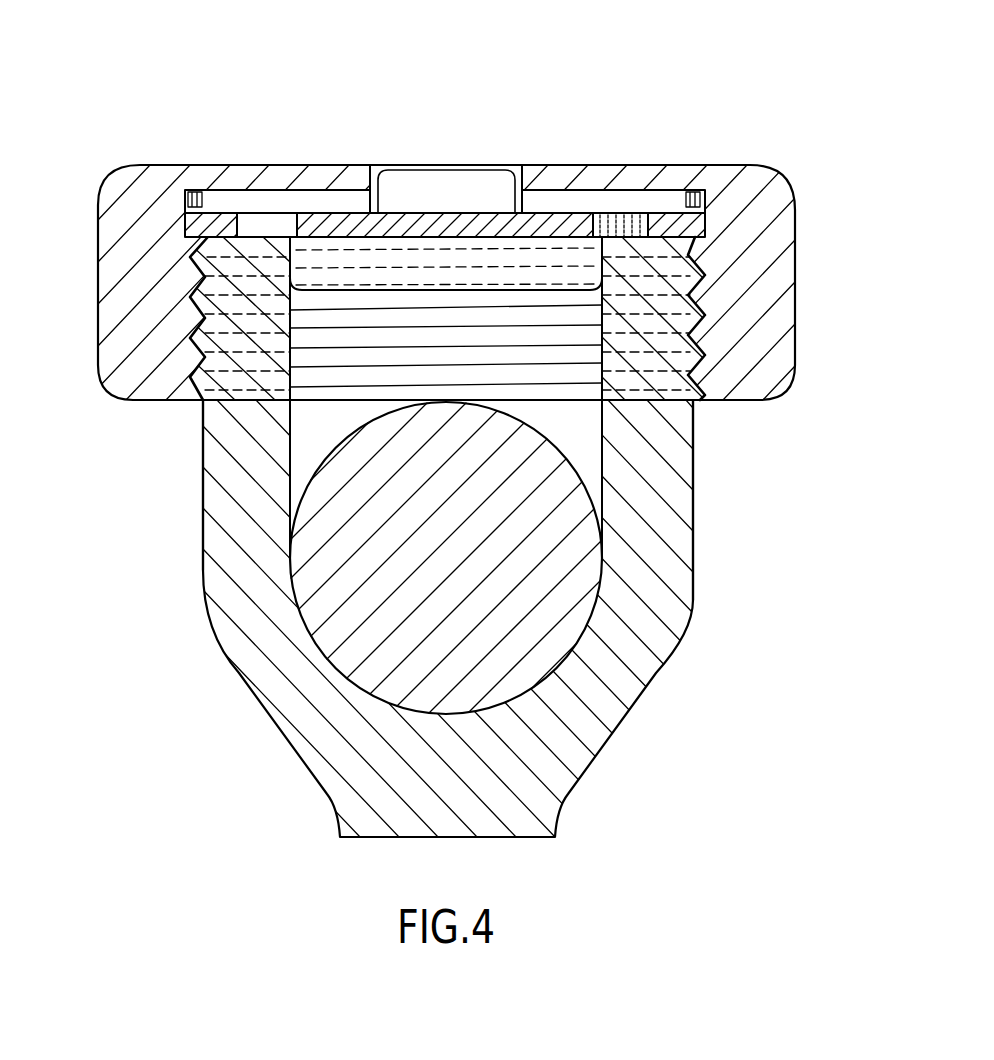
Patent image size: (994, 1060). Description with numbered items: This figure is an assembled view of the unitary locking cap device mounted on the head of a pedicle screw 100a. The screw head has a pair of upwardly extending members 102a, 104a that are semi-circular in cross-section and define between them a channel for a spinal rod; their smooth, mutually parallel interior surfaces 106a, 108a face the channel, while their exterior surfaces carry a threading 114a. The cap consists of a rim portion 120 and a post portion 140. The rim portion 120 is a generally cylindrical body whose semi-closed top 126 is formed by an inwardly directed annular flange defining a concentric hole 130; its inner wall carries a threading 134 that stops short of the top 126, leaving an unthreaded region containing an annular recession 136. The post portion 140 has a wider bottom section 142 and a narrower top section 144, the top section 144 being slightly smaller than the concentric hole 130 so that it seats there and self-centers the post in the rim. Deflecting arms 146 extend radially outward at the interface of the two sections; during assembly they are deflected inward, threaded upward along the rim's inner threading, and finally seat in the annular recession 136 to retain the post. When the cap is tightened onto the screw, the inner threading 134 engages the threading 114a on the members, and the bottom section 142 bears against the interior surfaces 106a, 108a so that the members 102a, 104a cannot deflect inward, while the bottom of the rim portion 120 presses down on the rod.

The pedicle screw 100a is at (444, 618).
The upwardly extending member 102a is at (223, 528).
The upwardly extending member 104a is at (673, 513).
The interior surface 106a is at (303, 330).
The interior surface 108a is at (592, 332).
The threading 114a is at (190, 337).
The rim portion 120 is at (763, 193).
The second semi-closed end 126 is at (582, 155).
The concentric hole 130 is at (407, 145).
The threading 134 is at (203, 278).
The annular recession 136 is at (203, 188).
The post portion 140 is at (367, 268).
The bottom section 142 is at (535, 250).
The top section 144 is at (448, 193).
The deflecting arms 146 is at (225, 220).